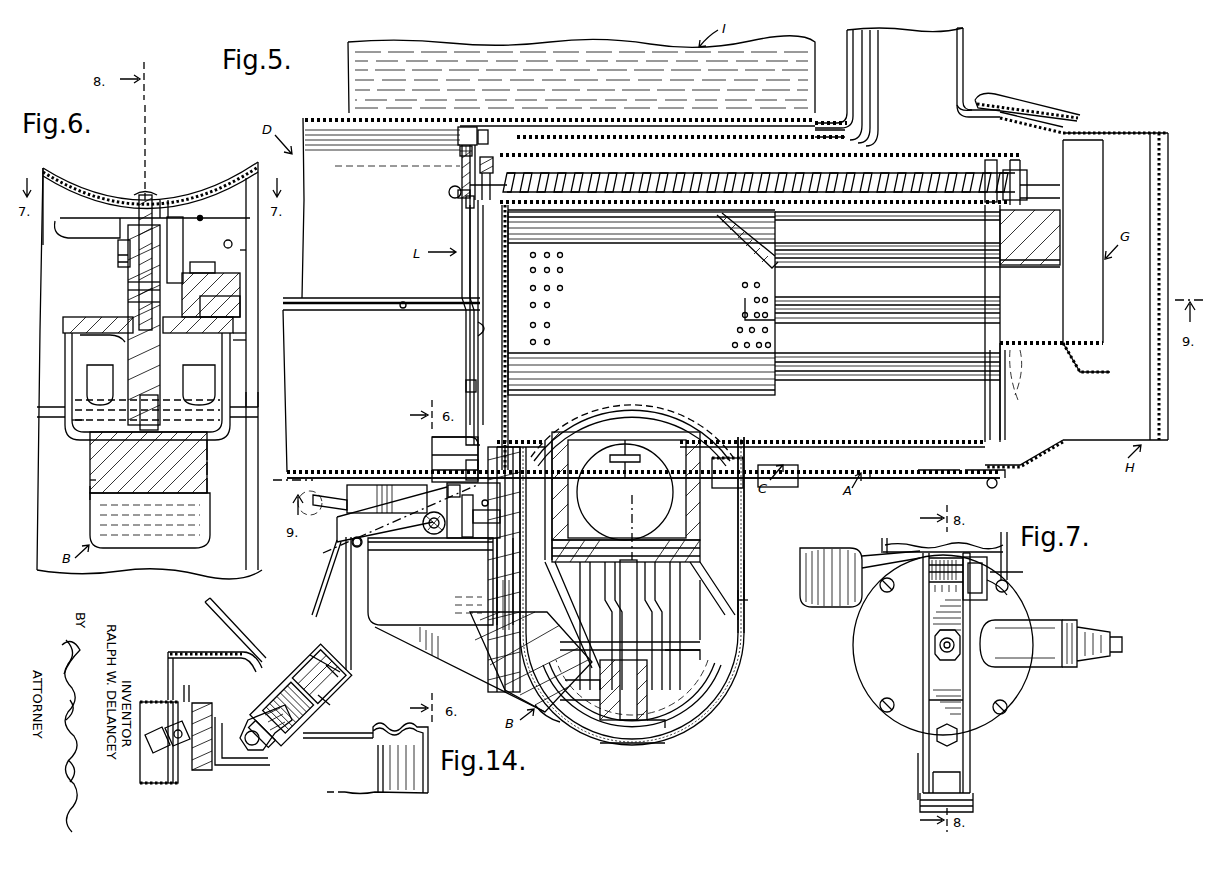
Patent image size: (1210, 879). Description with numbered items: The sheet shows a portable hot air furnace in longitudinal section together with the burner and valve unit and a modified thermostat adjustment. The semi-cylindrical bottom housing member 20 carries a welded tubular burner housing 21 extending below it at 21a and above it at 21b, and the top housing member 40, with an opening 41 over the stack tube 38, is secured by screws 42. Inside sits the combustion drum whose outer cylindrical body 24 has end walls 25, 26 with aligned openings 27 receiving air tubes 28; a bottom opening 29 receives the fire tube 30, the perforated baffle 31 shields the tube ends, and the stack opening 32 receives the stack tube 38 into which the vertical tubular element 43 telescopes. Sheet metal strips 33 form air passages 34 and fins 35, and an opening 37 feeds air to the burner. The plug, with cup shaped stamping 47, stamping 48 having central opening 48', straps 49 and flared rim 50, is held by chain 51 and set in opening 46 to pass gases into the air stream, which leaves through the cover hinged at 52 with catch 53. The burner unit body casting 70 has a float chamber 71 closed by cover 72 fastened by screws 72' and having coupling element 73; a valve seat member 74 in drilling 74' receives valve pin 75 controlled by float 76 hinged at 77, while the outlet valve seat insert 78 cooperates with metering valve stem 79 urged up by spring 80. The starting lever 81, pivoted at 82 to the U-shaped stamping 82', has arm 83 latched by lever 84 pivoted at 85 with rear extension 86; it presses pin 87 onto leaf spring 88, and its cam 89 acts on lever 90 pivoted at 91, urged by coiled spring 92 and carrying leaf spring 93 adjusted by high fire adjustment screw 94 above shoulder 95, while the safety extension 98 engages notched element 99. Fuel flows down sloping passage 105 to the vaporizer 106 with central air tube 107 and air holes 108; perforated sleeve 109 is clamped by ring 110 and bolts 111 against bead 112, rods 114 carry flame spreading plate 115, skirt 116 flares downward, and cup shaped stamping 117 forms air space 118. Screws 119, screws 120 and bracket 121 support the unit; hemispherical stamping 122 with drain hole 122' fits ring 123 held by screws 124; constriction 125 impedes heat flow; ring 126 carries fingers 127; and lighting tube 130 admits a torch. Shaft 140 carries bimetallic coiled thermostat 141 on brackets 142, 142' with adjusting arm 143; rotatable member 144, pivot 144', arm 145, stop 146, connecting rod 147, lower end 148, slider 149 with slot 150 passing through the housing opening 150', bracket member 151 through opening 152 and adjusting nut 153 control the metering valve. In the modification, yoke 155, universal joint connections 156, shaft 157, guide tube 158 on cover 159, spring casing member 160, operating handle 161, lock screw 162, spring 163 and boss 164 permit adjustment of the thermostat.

In FIG. 6, the bottom housing member 20 is at (258, 392).
In FIG. 5, the bottom housing member 20 is at (297, 365).
In FIG. 6, the tubular burner housing 21 is at (43, 245).
In FIG. 5, the tubular burner housing 21 is at (745, 535).
In FIG. 5, the lower extension of burner housing tube 21a is at (745, 555).
In FIG. 5, the upper extension of burner housing tube 21b is at (758, 442).
In FIG. 5, the outer cylindrical body 24 is at (820, 470).
In FIG. 5, the end wall 25 is at (470, 372).
In FIG. 5, the end wall 26 is at (1005, 418).
In FIG. 14, the end wall 26 is at (189, 690).
In FIG. 5, the aligned openings 27 is at (487, 200).
In FIG. 5, the air tubes 28 is at (655, 210).
In FIG. 14, the air tubes 28 is at (148, 702).
In FIG. 5, the opening 29 is at (715, 447).
In FIG. 5, the fire tube 30 is at (572, 440).
In FIG. 5, the baffle 31 is at (742, 246).
In FIG. 5, the stack opening 32 is at (835, 143).
In FIG. 5, the sheet metal strips 33 is at (888, 470).
In FIG. 5, the air passages 34 is at (990, 450).
In FIG. 5, the fins 35 is at (918, 472).
In FIG. 5, the opening 37 is at (505, 440).
In FIG. 5, the stack tube 38 is at (907, 87).
In FIG. 5, the top housing member 40 is at (306, 118).
In FIG. 5, the opening 41 is at (970, 98).
In FIG. 5, the screws 42 is at (401, 300).
In FIG. 5, the vertical tubular element 43 is at (965, 36).
In FIG. 5, the opening 46 is at (1005, 235).
In FIG. 5, the cup shaped stamping 47 is at (1103, 300).
In FIG. 5, the stamping 48 is at (1050, 376).
In FIG. 5, the central opening 48' is at (1030, 282).
In FIG. 5, the straps 49 is at (1090, 240).
In FIG. 5, the outwardly flared rim 50 is at (1040, 200).
In FIG. 5, the chain 51 is at (1022, 380).
In FIG. 5, the hinge 52 is at (986, 484).
In FIG. 5, the catch 53 is at (985, 97).
In FIG. 6, the body casting 70 is at (76, 452).
In FIG. 5, the body casting 70 is at (381, 630).
In FIG. 6, the float chamber 71 is at (80, 420).
In FIG. 6, the cover 72 is at (142, 308).
In FIG. 5, the cover 72 is at (430, 581).
In FIG. 7, the cover 72 is at (960, 645).
In FIG. 7, the screws 72' is at (956, 653).
In FIG. 6, the tubular coupling element 73 is at (242, 270).
In FIG. 5, the tubular coupling element 73 is at (415, 555).
In FIG. 7, the tubular coupling element 73 is at (1062, 622).
In FIG. 6, the valve seat member 74 is at (241, 300).
In FIG. 6, the drilling 74' is at (200, 259).
In FIG. 6, the valve pin 75 is at (244, 320).
In FIG. 6, the float 76 is at (72, 382).
In FIG. 6, the hinge 77 is at (244, 346).
In FIG. 6, the outlet valve seat insert 78 is at (208, 452).
In FIG. 6, the metering valve stem 79 is at (128, 302).
In FIG. 7, the metering valve stem 79 is at (975, 640).
In FIG. 6, the spring 80 is at (100, 385).
In FIG. 5, the starting lever 81 is at (320, 582).
In FIG. 7, the starting lever 81 is at (975, 805).
In FIG. 7, the pivot 82 is at (952, 672).
In FIG. 6, the U-shaped stamping 82' is at (178, 188).
In FIG. 5, the U-shaped stamping 82' is at (380, 480).
In FIG. 7, the U-shaped stamping 82' is at (986, 591).
In FIG. 6, the arm 83 is at (128, 282).
In FIG. 5, the arm 83 is at (340, 540).
In FIG. 7, the arm 83 is at (971, 692).
In FIG. 7, the latch lever 84 is at (828, 548).
In FIG. 6, the pivot 85 is at (211, 222).
In FIG. 7, the pivot 85 is at (975, 553).
In FIG. 6, the rear extension 86 is at (118, 245).
In FIG. 5, the rear extension 86 is at (465, 525).
In FIG. 7, the rear extension 86 is at (1012, 588).
In FIG. 6, the pin 87 is at (199, 385).
In FIG. 6, the leaf spring 88 is at (82, 340).
In FIG. 5, the cam 89 is at (345, 495).
In FIG. 7, the cam 89 is at (973, 782).
In FIG. 6, the lever 90 is at (128, 240).
In FIG. 7, the lever 90 is at (930, 710).
In FIG. 6, the pivot 91 is at (118, 262).
In FIG. 7, the pivot 91 is at (925, 568).
In FIG. 7, the coiled spring 92 is at (945, 585).
In FIG. 6, the leaf spring 93 is at (128, 290).
In FIG. 7, the high fire adjustment screw 94 is at (935, 740).
In FIG. 6, the shoulder 95 is at (176, 256).
In FIG. 6, the extension 98 is at (210, 272).
In FIG. 5, the extension 98 is at (505, 470).
In FIG. 7, the extension 98 is at (1005, 532).
In FIG. 6, the notched element 99 is at (232, 240).
In FIG. 5, the notched element 99 is at (470, 545).
In FIG. 7, the notched element 99 is at (1023, 573).
In FIG. 6, the sloping passage 105 is at (150, 447).
In FIG. 5, the sloping passage 105 is at (514, 685).
In FIG. 5, the vaporizer 106 is at (700, 712).
In FIG. 5, the central air tube 107 is at (628, 722).
In FIG. 5, the air holes 108 is at (700, 655).
In FIG. 5, the perforated sleeve 109 is at (600, 560).
In FIG. 5, the ring 110 is at (648, 560).
In FIG. 5, the bolts 111 is at (700, 585).
In FIG. 5, the bead 112 is at (700, 535).
In FIG. 5, the rods 114 is at (580, 480).
In FIG. 5, the flame spreading plate 115 is at (615, 440).
In FIG. 5, the skirt 116 is at (712, 565).
In FIG. 5, the cup shaped stamping 117 is at (715, 655).
In FIG. 5, the air space 118 is at (718, 680).
In FIG. 5, the screws 119 is at (660, 540).
In FIG. 6, the screws 120 is at (208, 490).
In FIG. 6, the bracket 121 is at (208, 466).
In FIG. 5, the bracket 121 is at (500, 622).
In FIG. 7, the bracket 121 is at (884, 538).
In FIG. 6, the hemispherical stamping 122 is at (70, 480).
In FIG. 5, the hemispherical stamping 122 is at (650, 591).
In FIG. 5, the drain hole 122' is at (648, 759).
In FIG. 5, the ring 123 is at (745, 590).
In FIG. 5, the screws 124 is at (744, 605).
In FIG. 5, the constriction 125 is at (548, 710).
In FIG. 5, the ring 126 is at (652, 730).
In FIG. 5, the fingers 127 is at (700, 642).
In FIG. 5, the lighting tube 130 is at (662, 465).
In FIG. 5, the shaft 140 is at (605, 170).
In FIG. 14, the shaft 140 is at (230, 760).
In FIG. 5, the bimetallic coiled thermostat 141 is at (650, 172).
In FIG. 14, the bimetallic coiled thermostat 141 is at (158, 765).
In FIG. 5, the bracket 142 is at (1046, 123).
In FIG. 5, the bracket 142' is at (429, 192).
In FIG. 5, the adjusting arm 143 is at (1030, 178).
In FIG. 5, the rotatable member 144 is at (436, 166).
In FIG. 5, the pivot 144' is at (434, 201).
In FIG. 5, the arm 145 is at (460, 150).
In FIG. 5, the stop 146 is at (485, 140).
In FIG. 5, the connecting rod 147 is at (460, 230).
In FIG. 5, the lower end of connecting rod 148 is at (470, 385).
In FIG. 5, the slider 149 is at (478, 328).
In FIG. 5, the slot 150 is at (437, 211).
In FIG. 5, the support 150' is at (459, 460).
In FIG. 6, the bracket member 151 is at (150, 186).
In FIG. 5, the bracket member 151 is at (440, 437).
In FIG. 5, the opening 152 is at (432, 455).
In FIG. 6, the adjusting nut 153 is at (140, 192).
In FIG. 5, the adjusting nut 153 is at (432, 470).
In FIG. 7, the adjusting nut 153 is at (933, 650).
In FIG. 14, the yoke 155 is at (272, 768).
In FIG. 14, the universal joint connections 156 is at (272, 733).
In FIG. 14, the shaft 157 is at (300, 665).
In FIG. 14, the guide tube 158 is at (335, 675).
In FIG. 14, the air delivery cover 159 is at (330, 730).
In FIG. 14, the spring casing member 160 is at (333, 700).
In FIG. 14, the operating handle 161 is at (206, 612).
In FIG. 14, the lock screw 162 is at (320, 662).
In FIG. 14, the spring 163 is at (275, 660).
In FIG. 14, the boss 164 is at (255, 716).